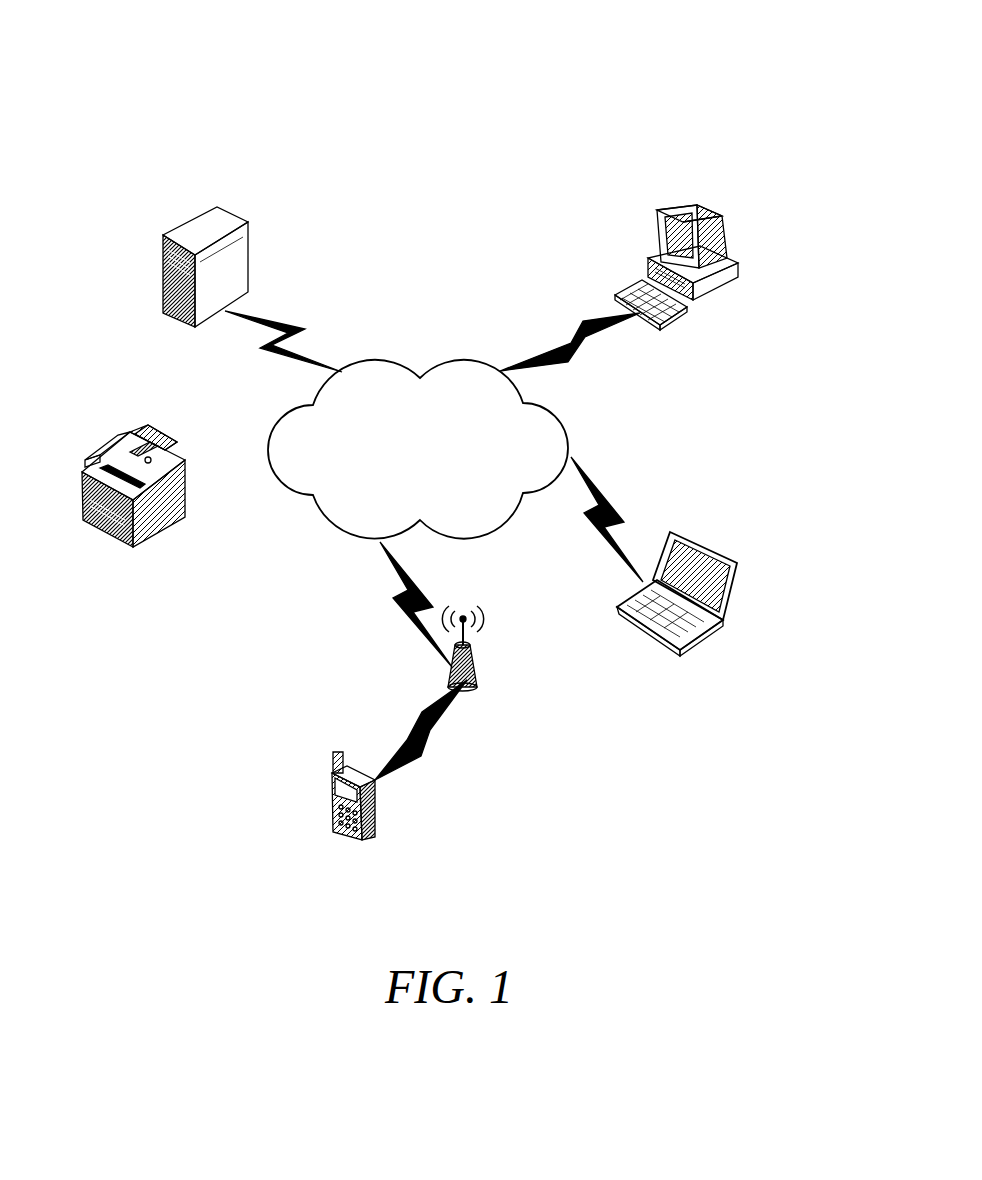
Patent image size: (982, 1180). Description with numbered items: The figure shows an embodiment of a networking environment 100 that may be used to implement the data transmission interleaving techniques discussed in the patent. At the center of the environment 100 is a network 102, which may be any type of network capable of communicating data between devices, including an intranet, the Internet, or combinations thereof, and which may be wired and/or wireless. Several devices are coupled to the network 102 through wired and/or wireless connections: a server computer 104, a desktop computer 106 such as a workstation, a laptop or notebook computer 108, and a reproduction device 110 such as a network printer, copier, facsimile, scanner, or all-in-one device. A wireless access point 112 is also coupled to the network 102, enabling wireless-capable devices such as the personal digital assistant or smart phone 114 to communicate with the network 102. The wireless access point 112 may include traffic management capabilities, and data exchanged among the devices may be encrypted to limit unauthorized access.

The networking environment 100 is at (680, 104).
The network 102 is at (436, 483).
The server computer 104 is at (248, 258).
The desktop computer 106 is at (658, 247).
The laptop computer 108 is at (735, 565).
The reproduction device 110 is at (133, 547).
The wireless access point 112 is at (473, 668).
The smart phone 114 is at (373, 835).